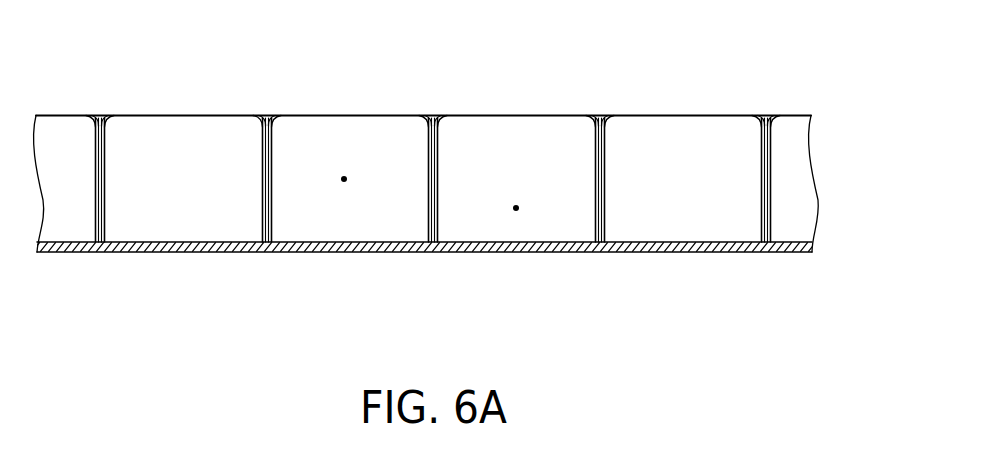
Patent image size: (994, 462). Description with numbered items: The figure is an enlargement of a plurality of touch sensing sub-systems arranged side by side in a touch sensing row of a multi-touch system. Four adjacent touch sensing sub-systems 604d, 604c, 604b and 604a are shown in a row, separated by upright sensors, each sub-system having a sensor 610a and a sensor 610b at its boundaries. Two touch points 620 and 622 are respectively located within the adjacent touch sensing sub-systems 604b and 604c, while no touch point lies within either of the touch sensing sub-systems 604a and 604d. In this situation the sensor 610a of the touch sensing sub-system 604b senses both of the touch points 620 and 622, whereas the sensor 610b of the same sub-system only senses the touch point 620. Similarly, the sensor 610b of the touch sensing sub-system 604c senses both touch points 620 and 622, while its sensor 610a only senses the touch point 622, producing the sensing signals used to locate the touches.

The touch sensing sub-system 604a is at (685, 228).
The touch sensing sub-system 604b is at (553, 228).
The touch sensing sub-system 604c is at (347, 228).
The touch sensing sub-system 604d is at (177, 228).
The sensor 610a is at (426, 118).
The sensor 610b is at (272, 118).
The touch point 620 is at (516, 206).
The touch point 622 is at (344, 177).